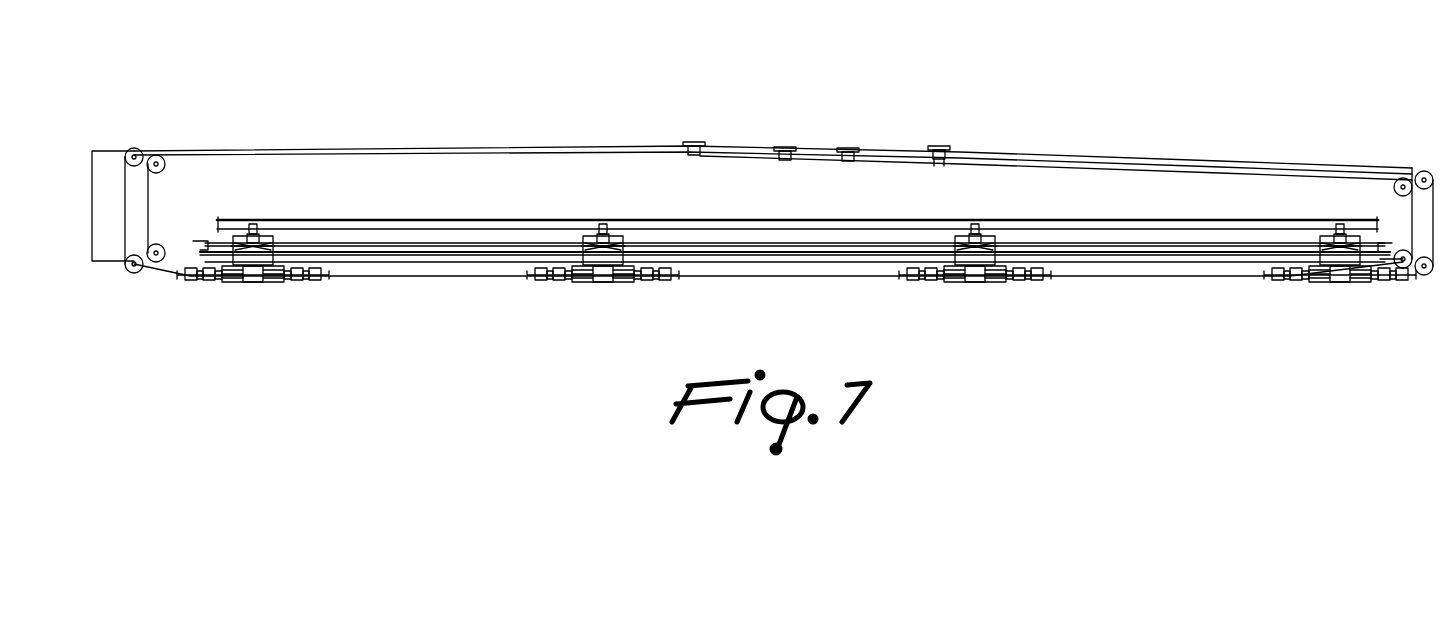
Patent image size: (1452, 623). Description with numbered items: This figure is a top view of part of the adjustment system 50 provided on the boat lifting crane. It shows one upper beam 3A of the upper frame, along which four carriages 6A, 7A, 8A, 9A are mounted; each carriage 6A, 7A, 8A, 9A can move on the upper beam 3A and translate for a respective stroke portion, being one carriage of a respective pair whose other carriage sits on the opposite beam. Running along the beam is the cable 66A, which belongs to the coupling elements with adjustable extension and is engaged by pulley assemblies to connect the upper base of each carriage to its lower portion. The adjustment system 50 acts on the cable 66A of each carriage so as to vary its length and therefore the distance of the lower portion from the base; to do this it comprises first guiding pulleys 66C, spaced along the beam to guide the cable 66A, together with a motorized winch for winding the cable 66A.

The adjustment system 50 is at (323, 113).
The upper beam 3A is at (551, 180).
The cable 66A is at (124, 218).
The first guiding pulleys 66C is at (681, 136).
The carriage 6A is at (253, 280).
The carriage 7A is at (602, 282).
The carriage 8A is at (976, 280).
The carriage 9A is at (1340, 280).